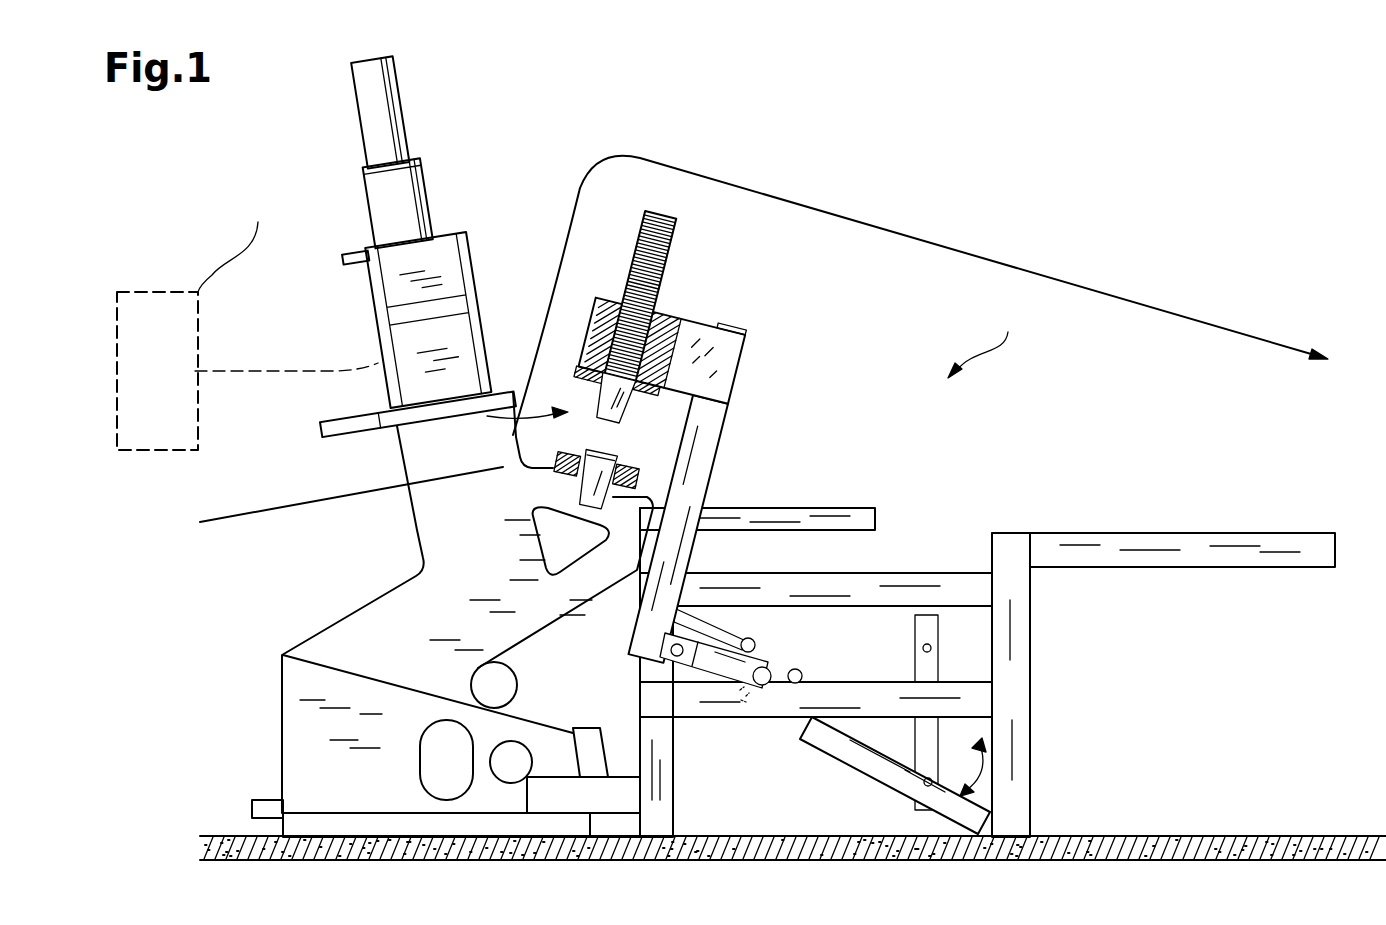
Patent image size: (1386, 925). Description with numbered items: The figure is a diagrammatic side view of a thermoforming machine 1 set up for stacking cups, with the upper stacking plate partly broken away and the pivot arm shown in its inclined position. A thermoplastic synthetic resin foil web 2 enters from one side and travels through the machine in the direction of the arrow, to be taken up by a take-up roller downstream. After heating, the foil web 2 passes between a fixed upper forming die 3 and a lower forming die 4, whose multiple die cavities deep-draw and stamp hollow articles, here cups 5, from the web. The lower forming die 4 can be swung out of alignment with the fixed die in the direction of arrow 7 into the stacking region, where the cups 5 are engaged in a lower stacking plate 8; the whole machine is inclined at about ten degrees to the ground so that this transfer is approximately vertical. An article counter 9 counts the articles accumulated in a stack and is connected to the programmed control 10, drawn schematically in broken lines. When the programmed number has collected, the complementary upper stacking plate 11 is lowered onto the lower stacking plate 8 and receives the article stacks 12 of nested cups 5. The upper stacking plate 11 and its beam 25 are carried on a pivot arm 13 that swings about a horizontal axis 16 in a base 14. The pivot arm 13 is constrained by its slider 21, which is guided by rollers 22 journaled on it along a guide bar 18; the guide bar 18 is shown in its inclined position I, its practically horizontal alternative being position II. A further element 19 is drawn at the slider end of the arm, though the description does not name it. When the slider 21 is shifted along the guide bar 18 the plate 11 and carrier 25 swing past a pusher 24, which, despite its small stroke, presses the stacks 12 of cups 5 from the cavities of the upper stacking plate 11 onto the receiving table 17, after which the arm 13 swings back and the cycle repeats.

The thermoforming machine 1 is at (522, 134).
The thermoplastic synthetic resin foil web 2 is at (1022, 270).
The upper forming die 3 is at (443, 248).
The lower forming die 4 is at (408, 457).
The cups 5 is at (662, 212).
The arrow 7 is at (536, 412).
The lower stacking plate 8 is at (628, 478).
The article counter 9 is at (983, 340).
The programmed control 10 is at (163, 300).
The upper stacking plate 11 is at (584, 358).
The article stacks 12 is at (670, 246).
The pivot arm 13 is at (722, 410).
The base 14 is at (1020, 770).
The horizontal axis 16 is at (665, 657).
The receiving table 17 is at (1220, 545).
The guide bar 18 is at (862, 745).
The roller 19 is at (768, 683).
The slider 21 is at (720, 667).
The rollers 22 is at (800, 669).
The pusher 24 is at (825, 515).
The beam 25 is at (692, 338).